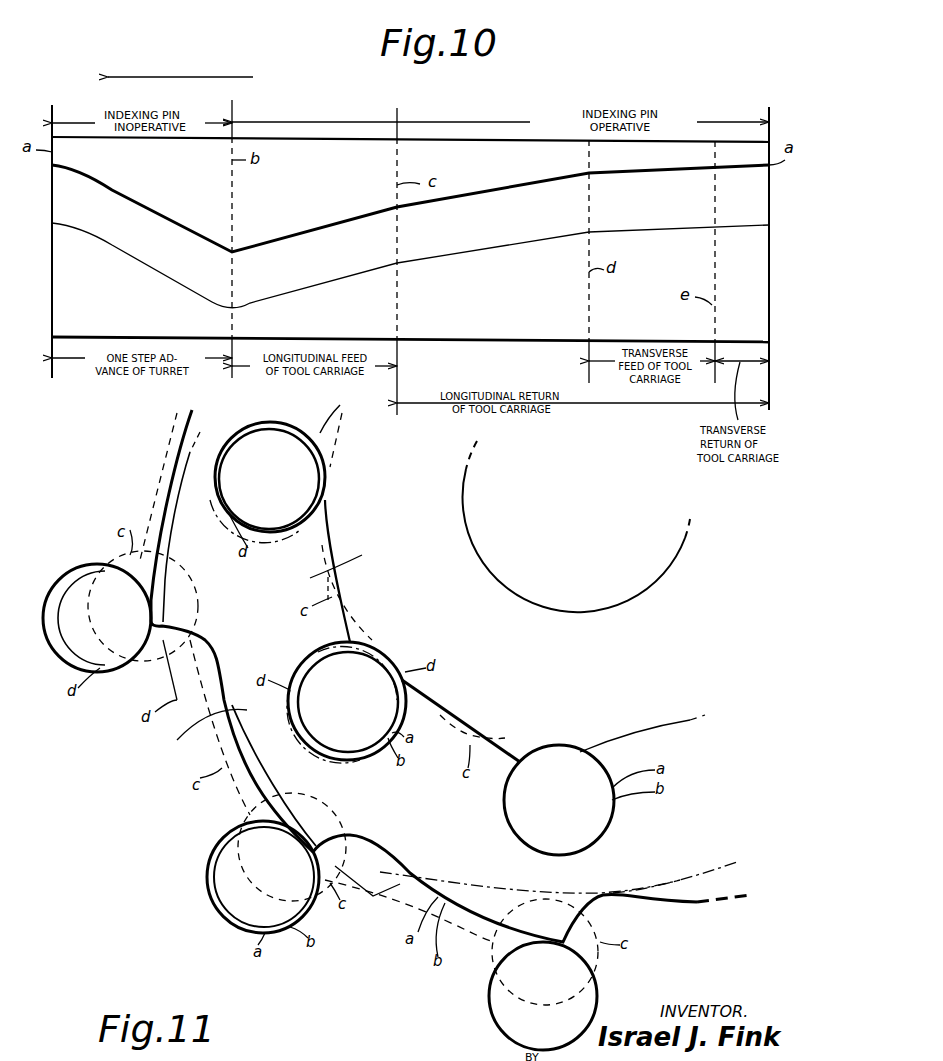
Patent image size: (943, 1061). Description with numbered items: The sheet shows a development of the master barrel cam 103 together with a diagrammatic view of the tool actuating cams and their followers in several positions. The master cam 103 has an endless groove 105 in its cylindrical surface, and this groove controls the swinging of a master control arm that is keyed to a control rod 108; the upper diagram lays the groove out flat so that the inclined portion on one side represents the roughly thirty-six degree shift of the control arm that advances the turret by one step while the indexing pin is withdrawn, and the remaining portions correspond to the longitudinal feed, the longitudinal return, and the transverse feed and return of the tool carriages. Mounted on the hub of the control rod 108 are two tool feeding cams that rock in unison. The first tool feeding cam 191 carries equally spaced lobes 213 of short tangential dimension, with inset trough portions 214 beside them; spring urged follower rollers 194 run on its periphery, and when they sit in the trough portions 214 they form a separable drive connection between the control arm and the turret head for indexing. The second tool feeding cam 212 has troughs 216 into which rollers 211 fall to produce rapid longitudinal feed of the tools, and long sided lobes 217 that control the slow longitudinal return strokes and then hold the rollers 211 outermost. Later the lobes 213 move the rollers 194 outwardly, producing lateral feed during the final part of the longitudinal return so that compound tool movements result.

In FIG. 10, the master barrel cam 103 is at (328, 157).
In FIG. 10, the endless groove 105 is at (536, 182).
In FIG. 11, the control rod 108 is at (592, 531).
In FIG. 11, the tool feeding cam 191 is at (652, 664).
In FIG. 11, the roller 194 is at (290, 485).
In FIG. 11, the roller 211 is at (122, 605).
In FIG. 11, the second tool feeding cam 212 is at (317, 677).
In FIG. 11, the lobes 213 is at (325, 433).
In FIG. 11, the trough portions 214 is at (330, 478).
In FIG. 11, the troughs 216 is at (207, 640).
In FIG. 11, the lobes 217 is at (172, 610).